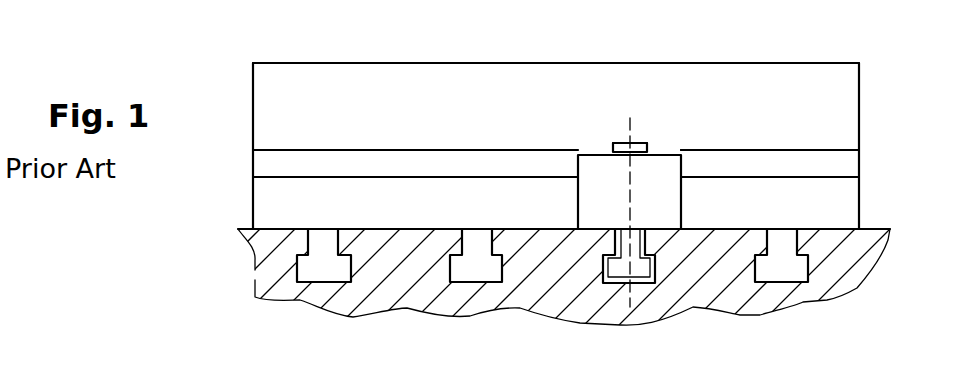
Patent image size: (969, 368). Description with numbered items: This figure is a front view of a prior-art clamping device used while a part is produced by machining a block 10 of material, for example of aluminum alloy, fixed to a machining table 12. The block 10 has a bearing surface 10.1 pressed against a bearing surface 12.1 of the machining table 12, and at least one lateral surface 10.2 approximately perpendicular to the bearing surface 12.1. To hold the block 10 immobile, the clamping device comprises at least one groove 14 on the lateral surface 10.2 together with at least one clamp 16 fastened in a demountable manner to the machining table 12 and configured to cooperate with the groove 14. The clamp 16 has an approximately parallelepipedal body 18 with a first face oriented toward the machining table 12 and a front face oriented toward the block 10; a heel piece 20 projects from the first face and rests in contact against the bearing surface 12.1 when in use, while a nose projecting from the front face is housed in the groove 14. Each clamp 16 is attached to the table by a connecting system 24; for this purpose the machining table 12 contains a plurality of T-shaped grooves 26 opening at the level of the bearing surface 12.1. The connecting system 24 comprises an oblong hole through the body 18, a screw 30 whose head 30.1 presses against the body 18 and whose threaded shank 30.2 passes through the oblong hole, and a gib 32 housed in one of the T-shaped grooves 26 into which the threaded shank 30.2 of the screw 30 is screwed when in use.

The block of material 10 is at (778, 63).
The bearing surface of the block 10.1 is at (272, 231).
The lateral surface 10.2 is at (342, 102).
The machining table 12 is at (855, 270).
The bearing surface of the machining table 12.1 is at (872, 228).
The groove 14 is at (833, 160).
The clamp 16 is at (679, 131).
The body 18 is at (597, 178).
The heel piece 20 is at (592, 220).
The connecting system 24 is at (637, 114).
The T-shaped grooves 26 is at (467, 272).
The screw 30 is at (617, 131).
The head 30.1 is at (647, 147).
The threaded shank 30.2 is at (645, 243).
The gib 32 is at (620, 268).